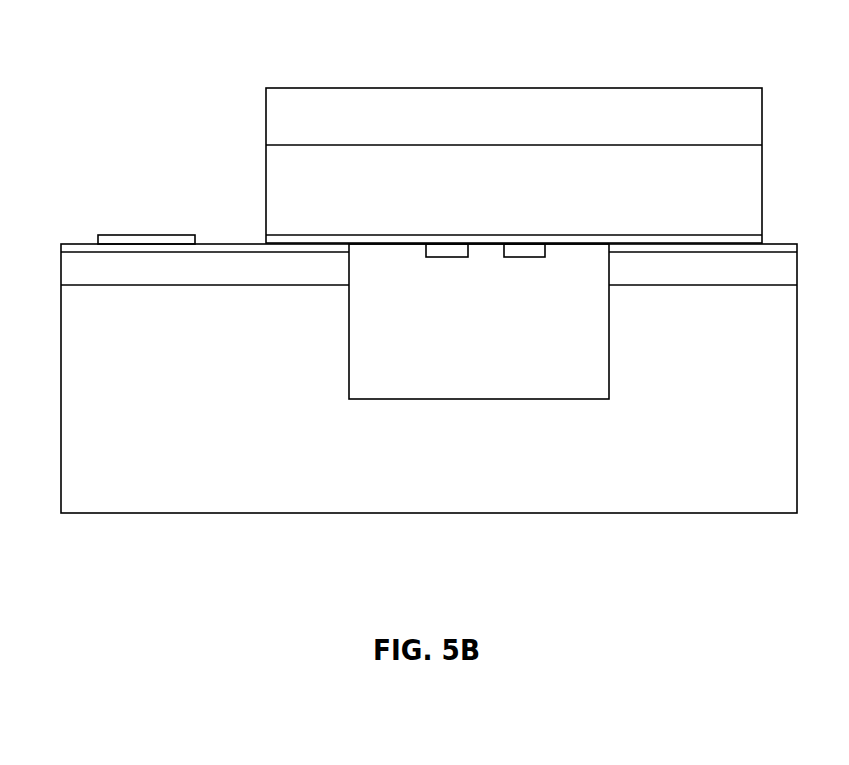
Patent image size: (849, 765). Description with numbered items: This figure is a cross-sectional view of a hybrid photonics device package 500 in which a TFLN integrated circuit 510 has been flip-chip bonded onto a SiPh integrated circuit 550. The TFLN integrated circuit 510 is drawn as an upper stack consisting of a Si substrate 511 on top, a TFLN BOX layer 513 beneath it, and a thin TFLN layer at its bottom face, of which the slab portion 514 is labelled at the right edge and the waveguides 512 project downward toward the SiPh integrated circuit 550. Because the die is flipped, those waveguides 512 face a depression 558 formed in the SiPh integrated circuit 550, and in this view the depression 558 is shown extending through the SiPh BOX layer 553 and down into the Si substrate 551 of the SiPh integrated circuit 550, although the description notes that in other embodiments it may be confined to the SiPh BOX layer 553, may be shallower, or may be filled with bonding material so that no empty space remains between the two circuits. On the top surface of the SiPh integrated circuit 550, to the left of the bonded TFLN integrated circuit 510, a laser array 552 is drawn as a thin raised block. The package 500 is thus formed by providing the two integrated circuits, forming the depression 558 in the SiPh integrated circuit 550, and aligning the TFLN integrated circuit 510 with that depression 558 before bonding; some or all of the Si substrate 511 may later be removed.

The hybrid photonics device package 500 is at (131, 76).
The TFLN integrated circuit 510 is at (222, 134).
The Si substrate 511 is at (595, 129).
The TFLN BOX layer 513 is at (355, 190).
The slab portion 514 is at (722, 235).
The waveguides 512 is at (486, 280).
The SiPh integrated circuit 550 is at (186, 522).
The Si substrate 551 is at (233, 441).
The SiPh BOX layer 553 is at (317, 283).
The laser array 552 is at (147, 233).
The depression 558 is at (530, 420).